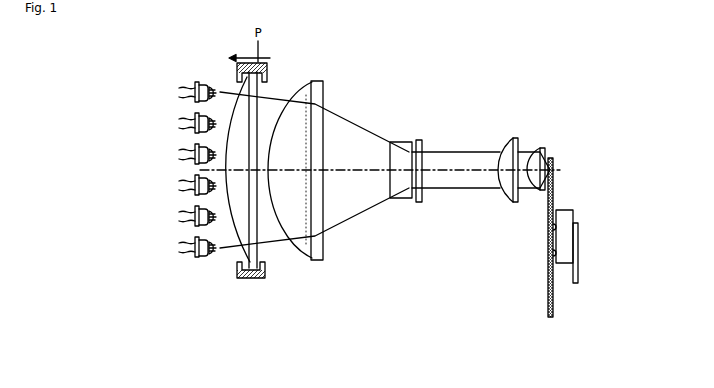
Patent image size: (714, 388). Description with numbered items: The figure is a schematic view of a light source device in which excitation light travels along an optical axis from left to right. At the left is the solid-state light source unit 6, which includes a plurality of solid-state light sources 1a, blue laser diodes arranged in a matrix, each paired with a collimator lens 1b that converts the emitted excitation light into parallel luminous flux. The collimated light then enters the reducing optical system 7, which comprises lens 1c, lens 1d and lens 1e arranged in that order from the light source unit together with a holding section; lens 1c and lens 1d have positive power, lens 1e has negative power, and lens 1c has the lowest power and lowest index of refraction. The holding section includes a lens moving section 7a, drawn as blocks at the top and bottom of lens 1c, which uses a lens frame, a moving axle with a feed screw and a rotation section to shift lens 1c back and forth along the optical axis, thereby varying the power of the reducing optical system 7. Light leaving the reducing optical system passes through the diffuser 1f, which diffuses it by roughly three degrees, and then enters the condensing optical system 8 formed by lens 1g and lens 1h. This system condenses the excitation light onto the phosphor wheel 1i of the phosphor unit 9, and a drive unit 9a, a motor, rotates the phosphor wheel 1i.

The solid-state light source 1a is at (196, 262).
The collimator lens 1b is at (211, 260).
The lens 1c is at (253, 278).
The lens 1d is at (314, 261).
The lens 1e is at (398, 198).
The diffuser 1f is at (420, 138).
The lens 1g is at (516, 137).
The lens 1h is at (542, 147).
The phosphor wheel 1i is at (553, 297).
The solid-state light source unit 6 is at (225, 76).
The reducing optical system 7 is at (326, 202).
The lens moving section 7a is at (272, 65).
The condensing optical system 8 is at (547, 205).
The phosphor unit 9 is at (587, 322).
The drive unit 9a is at (568, 210).